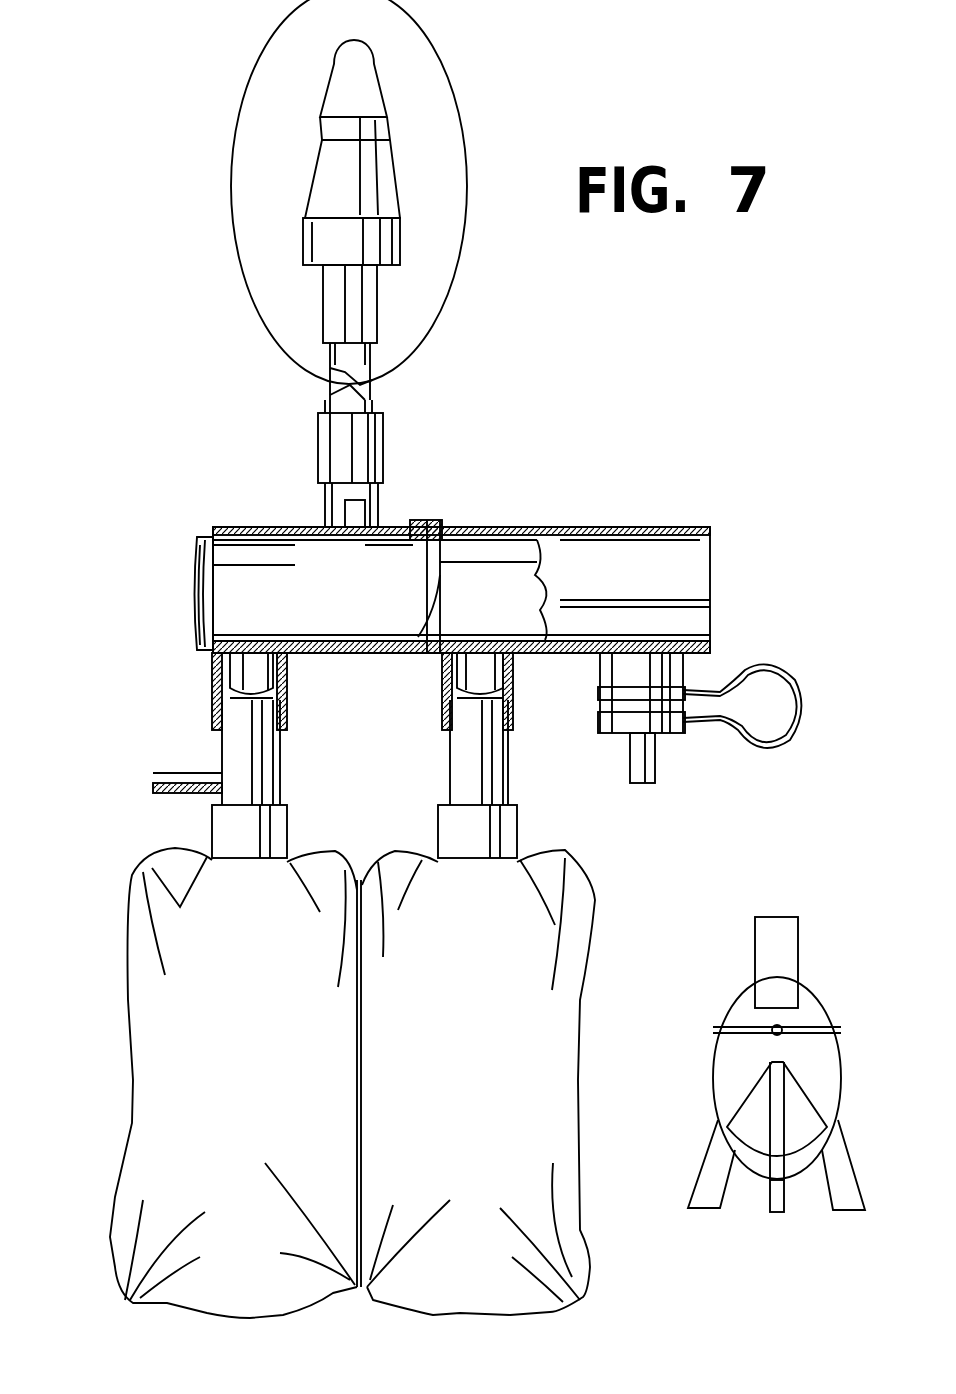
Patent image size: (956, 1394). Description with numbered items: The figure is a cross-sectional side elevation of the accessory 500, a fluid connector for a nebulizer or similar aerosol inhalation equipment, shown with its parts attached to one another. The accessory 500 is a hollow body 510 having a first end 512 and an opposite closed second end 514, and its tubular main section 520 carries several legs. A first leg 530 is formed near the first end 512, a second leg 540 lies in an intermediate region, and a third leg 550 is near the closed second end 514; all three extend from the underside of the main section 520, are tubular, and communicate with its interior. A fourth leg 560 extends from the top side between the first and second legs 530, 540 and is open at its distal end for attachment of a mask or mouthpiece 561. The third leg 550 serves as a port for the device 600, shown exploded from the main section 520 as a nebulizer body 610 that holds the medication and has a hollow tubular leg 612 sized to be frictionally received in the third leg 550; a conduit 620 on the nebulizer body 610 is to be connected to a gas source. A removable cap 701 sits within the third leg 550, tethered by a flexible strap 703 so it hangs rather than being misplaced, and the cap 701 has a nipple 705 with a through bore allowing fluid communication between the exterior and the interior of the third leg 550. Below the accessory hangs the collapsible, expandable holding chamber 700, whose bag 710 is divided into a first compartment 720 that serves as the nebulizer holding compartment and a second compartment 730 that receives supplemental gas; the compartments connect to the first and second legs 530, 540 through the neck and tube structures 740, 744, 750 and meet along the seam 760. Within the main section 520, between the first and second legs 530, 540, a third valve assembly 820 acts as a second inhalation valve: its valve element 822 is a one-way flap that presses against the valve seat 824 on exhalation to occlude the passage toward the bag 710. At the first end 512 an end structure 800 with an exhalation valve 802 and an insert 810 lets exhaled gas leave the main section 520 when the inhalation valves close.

The accessory 500 is at (722, 562).
The body 510 is at (272, 525).
The first end 512 is at (207, 530).
The second end 514 is at (710, 605).
The main section 520 is at (400, 525).
The first leg 530 is at (290, 705).
The second leg 540 is at (513, 687).
The third leg 550 is at (683, 672).
The fourth leg 560 is at (385, 490).
The mouthpiece 561 is at (258, 108).
The device 600 is at (836, 1012).
The nebulizer body 610 is at (826, 1097).
The leg 612 is at (790, 950).
The conduit 620 is at (772, 1198).
The holding chamber 700 is at (125, 1003).
The removable cap 701 is at (683, 738).
The flexible strap 703 is at (800, 706).
The nipple 705 is at (650, 785).
The bag 710 is at (190, 1120).
The first compartment 720 is at (272, 988).
The second compartment 730 is at (500, 988).
The first neck 740 is at (268, 765).
The side tube 744 is at (150, 778).
The second neck 750 is at (492, 772).
The seam 760 is at (365, 1175).
The end cap 800 is at (196, 570).
The exhalation valve 802 is at (197, 622).
The insert 810 is at (278, 668).
The third valve assembly 820 is at (420, 567).
The valve element 822 is at (420, 618).
The valve seat 824 is at (435, 598).